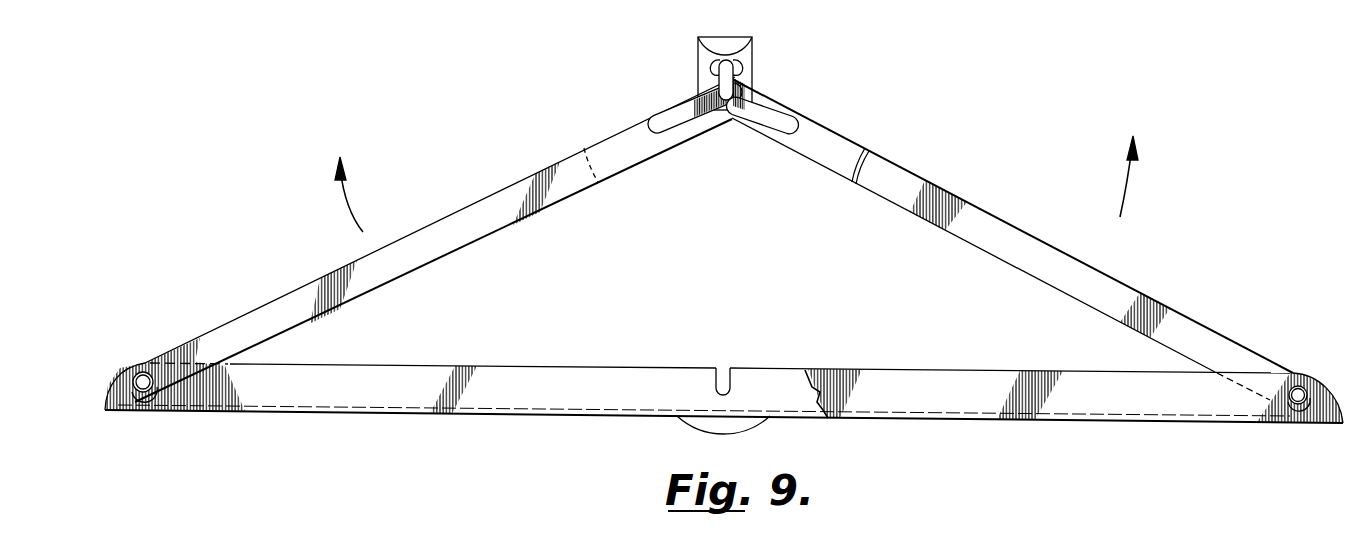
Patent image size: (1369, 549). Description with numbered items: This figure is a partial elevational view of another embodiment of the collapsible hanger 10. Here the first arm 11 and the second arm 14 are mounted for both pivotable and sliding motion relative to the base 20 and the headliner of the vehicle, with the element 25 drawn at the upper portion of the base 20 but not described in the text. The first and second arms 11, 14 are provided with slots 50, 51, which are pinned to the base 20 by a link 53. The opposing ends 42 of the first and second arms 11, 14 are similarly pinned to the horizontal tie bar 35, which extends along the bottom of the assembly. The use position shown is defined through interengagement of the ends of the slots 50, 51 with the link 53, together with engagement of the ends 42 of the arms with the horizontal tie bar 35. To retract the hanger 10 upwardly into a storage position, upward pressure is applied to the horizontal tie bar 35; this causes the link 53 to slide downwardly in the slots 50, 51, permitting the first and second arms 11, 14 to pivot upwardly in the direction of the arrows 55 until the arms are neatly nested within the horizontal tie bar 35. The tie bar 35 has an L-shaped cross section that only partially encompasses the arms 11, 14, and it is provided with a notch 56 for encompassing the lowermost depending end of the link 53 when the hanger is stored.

The collapsible hanger 10 is at (1163, 152).
The first arm 11 is at (477, 208).
The second arm 14 is at (1003, 230).
The base 20 is at (705, 58).
The hook seat 25 is at (735, 45).
The horizontal tie bar 35 is at (545, 392).
The opposing ends 42 is at (158, 366).
The slot 50 is at (672, 110).
The slot 51 is at (792, 117).
The link 53 is at (730, 80).
The arrows 55 is at (345, 200).
The notch 56 is at (724, 367).